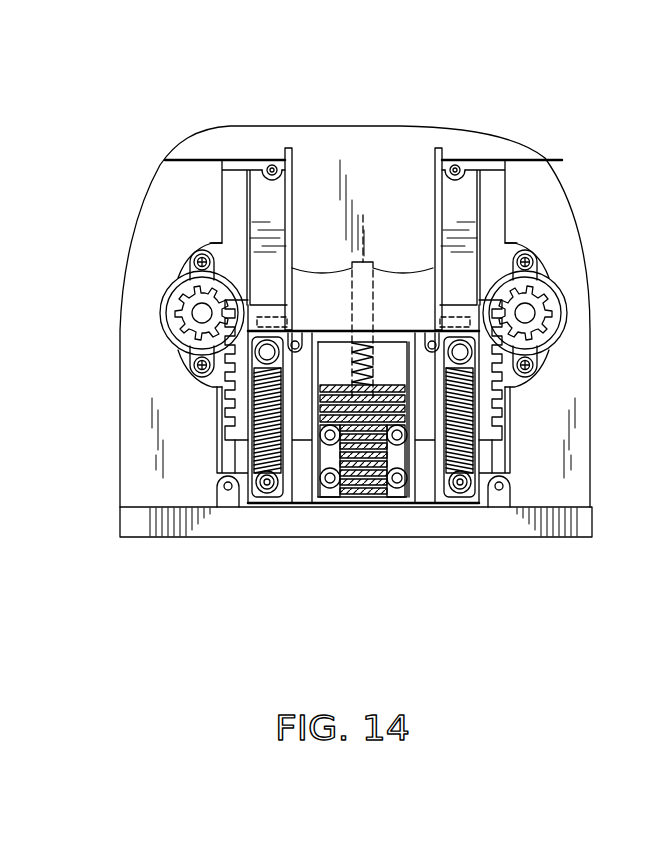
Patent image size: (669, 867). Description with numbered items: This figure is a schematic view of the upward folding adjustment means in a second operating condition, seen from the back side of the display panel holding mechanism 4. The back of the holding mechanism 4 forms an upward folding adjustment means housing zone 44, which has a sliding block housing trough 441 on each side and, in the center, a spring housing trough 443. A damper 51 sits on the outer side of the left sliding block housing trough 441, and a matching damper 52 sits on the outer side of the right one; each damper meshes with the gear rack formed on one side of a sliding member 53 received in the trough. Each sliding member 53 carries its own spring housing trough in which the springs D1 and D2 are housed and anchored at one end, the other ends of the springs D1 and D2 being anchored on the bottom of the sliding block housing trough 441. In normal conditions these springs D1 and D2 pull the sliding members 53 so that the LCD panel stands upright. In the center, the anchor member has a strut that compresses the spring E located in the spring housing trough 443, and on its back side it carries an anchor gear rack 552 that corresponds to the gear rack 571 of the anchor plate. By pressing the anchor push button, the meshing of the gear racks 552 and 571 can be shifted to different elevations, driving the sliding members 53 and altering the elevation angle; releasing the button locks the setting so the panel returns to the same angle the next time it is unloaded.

The display panel holding mechanism 4 is at (178, 538).
The upward folding adjustment means housing zone 44 is at (402, 140).
The sliding block housing trough 441 is at (260, 200).
The spring housing trough 443 is at (365, 256).
The spring E is at (373, 357).
The damper 51 is at (172, 268).
The damper 52 is at (547, 283).
The sliding member 53 is at (240, 402).
The spring D1 is at (250, 463).
The spring D2 is at (480, 460).
The anchor gear rack 552 is at (343, 480).
The gear rack 571 is at (368, 473).